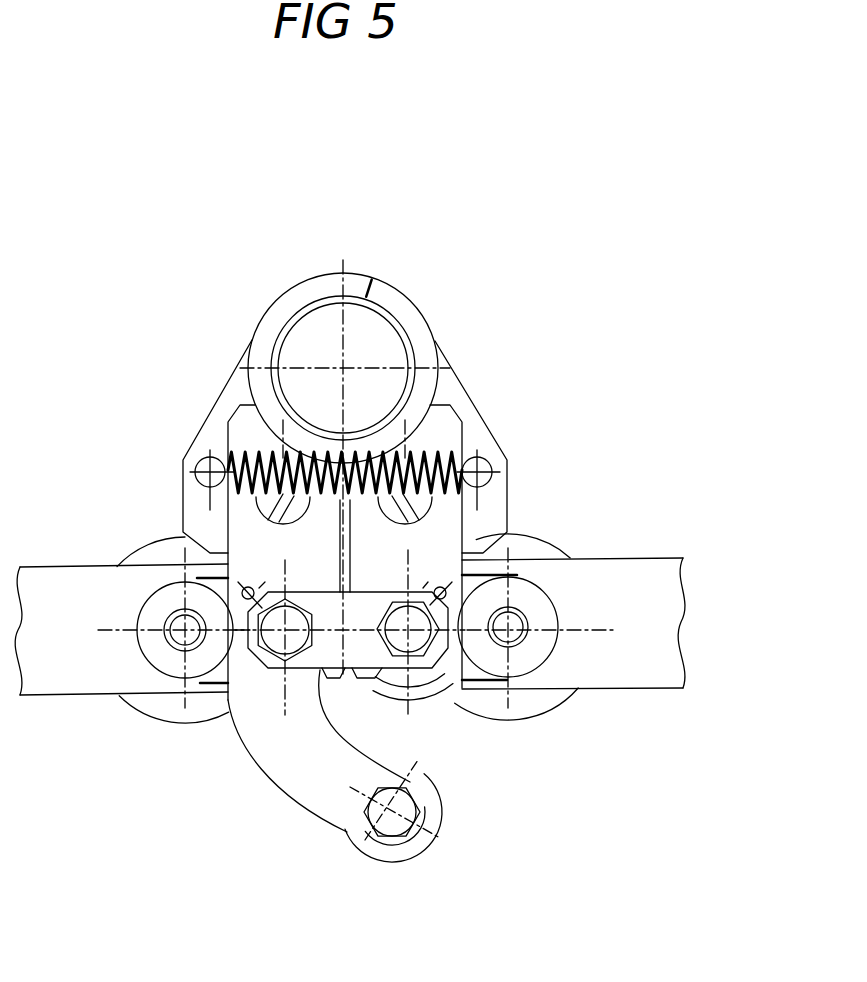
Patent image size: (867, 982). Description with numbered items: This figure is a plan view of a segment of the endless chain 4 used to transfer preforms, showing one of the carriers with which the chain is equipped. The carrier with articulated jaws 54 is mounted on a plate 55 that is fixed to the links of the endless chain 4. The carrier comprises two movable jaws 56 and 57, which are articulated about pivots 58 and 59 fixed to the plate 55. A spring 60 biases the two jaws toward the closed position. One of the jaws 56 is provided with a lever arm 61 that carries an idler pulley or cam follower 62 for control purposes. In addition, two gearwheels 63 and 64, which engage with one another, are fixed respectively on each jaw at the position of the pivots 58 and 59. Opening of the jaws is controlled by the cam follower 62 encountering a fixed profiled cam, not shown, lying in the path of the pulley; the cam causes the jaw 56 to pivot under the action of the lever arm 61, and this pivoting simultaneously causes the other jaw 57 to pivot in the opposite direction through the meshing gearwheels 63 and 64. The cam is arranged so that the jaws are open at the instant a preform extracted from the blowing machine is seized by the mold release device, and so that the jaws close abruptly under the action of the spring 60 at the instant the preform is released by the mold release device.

The endless chain 4 is at (620, 580).
The carrier with articulated jaws 54 is at (437, 422).
The plate 55 is at (493, 592).
The movable jaw 56 is at (297, 300).
The movable jaw 57 is at (392, 303).
The pivot 58 is at (280, 640).
The pivot 59 is at (413, 637).
The spring 60 is at (433, 440).
The lever arm 61 is at (313, 757).
The idler pulley or cam follower 62 is at (433, 817).
The gearwheel 63 is at (212, 618).
The gearwheel 64 is at (475, 623).